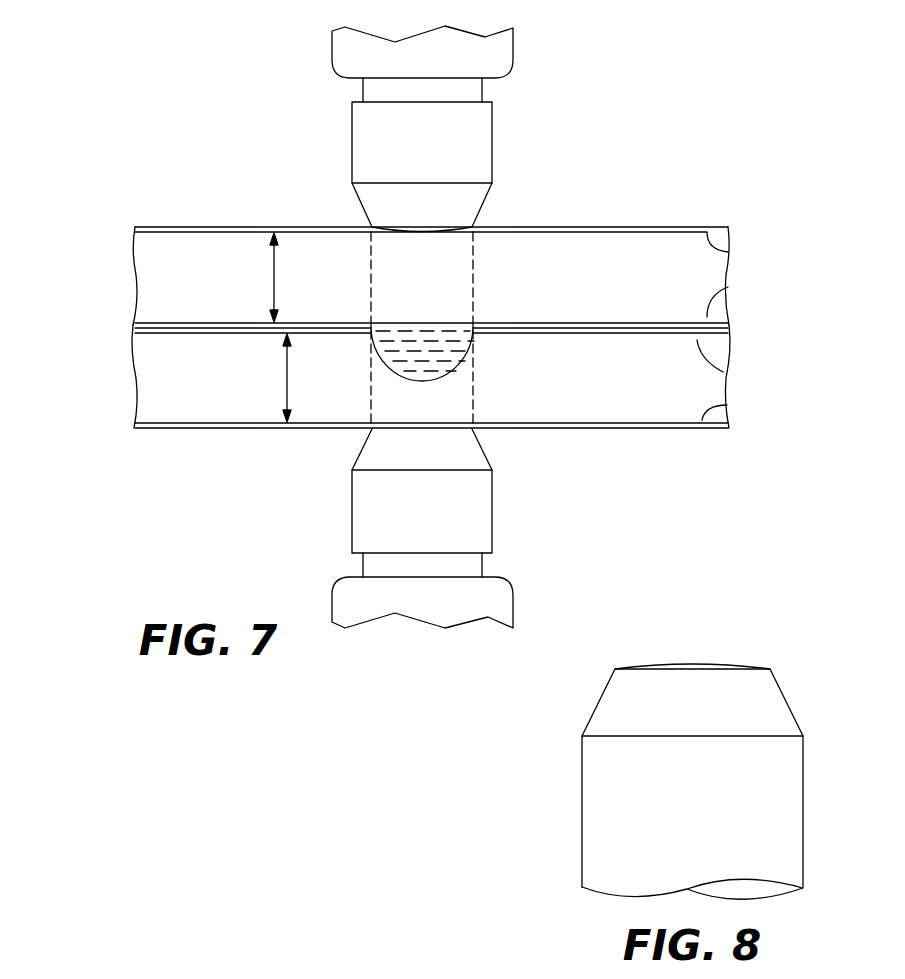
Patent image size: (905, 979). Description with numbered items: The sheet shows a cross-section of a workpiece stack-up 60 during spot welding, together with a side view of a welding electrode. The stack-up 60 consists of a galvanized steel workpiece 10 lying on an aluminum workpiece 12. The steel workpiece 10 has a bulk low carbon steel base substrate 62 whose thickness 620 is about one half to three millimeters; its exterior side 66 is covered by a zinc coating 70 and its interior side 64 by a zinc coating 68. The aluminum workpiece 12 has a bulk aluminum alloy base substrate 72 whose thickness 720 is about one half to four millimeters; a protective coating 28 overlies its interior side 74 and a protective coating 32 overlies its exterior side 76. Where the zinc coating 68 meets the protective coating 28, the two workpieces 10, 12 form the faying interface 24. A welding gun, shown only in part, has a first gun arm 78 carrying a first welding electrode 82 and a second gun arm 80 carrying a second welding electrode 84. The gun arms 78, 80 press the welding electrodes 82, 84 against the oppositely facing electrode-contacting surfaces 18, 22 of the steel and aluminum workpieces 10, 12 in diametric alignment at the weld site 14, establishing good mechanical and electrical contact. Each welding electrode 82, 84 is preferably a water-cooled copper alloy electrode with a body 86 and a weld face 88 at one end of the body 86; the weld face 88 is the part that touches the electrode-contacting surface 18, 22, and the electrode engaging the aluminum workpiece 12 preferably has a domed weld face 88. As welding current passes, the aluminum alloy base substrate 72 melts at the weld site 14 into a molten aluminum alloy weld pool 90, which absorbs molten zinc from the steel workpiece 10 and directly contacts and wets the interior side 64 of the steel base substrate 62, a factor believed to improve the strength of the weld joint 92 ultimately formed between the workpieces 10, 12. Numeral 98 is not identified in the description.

In FIG. 7, the steel workpiece 10 is at (430, 230).
In FIG. 7, the aluminum workpiece 12 is at (438, 403).
In FIG. 7, the weld site 14 is at (473, 258).
In FIG. 7, the electrode-contacting surface 18 is at (612, 228).
In FIG. 7, the electrode-contacting surface 22 is at (568, 429).
In FIG. 7, the faying interface 24 is at (370, 322).
In FIG. 7, the protective coating 28 is at (732, 330).
In FIG. 7, the protective coating 32 is at (648, 428).
In FIG. 7, the stack-up 60 is at (776, 177).
In FIG. 7, the steel base substrate 62 is at (203, 257).
In FIG. 7, the interior side 64 is at (728, 283).
In FIG. 7, the exterior side 66 is at (727, 252).
In FIG. 7, the zinc coating 68 is at (728, 323).
In FIG. 7, the zinc coating 70 is at (655, 228).
In FIG. 7, the aluminum alloy base substrate 72 is at (203, 390).
In FIG. 7, the interior side 74 is at (730, 375).
In FIG. 7, the exterior side 76 is at (728, 407).
In FIG. 7, the first gun arm 78 is at (352, 50).
In FIG. 7, the second gun arm 80 is at (350, 607).
In FIG. 7, the first welding electrode 82 is at (477, 153).
In FIG. 8, the first welding electrode 82 is at (692, 743).
In FIG. 7, the second welding electrode 84 is at (403, 507).
In FIG. 8, the second welding electrode 84 is at (649, 743).
In FIG. 8, the body 86 is at (598, 807).
In FIG. 8, the weld face 88 is at (693, 659).
In FIG. 7, the molten aluminum alloy weld pool 90 is at (435, 362).
In FIG. 7, the thickness 620 is at (256, 292).
In FIG. 7, the thickness 720 is at (270, 394).
In FIG. 8, the weld joint 92 is at (290, 978).
In FIG. 8, the element 98 is at (386, 978).